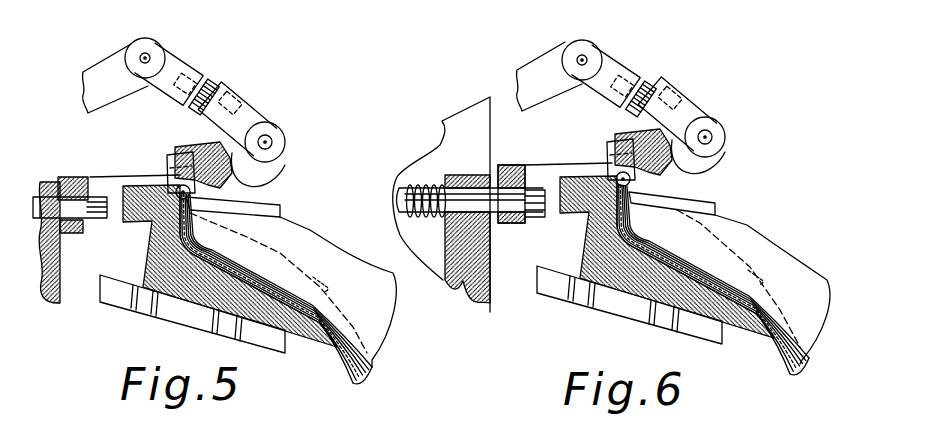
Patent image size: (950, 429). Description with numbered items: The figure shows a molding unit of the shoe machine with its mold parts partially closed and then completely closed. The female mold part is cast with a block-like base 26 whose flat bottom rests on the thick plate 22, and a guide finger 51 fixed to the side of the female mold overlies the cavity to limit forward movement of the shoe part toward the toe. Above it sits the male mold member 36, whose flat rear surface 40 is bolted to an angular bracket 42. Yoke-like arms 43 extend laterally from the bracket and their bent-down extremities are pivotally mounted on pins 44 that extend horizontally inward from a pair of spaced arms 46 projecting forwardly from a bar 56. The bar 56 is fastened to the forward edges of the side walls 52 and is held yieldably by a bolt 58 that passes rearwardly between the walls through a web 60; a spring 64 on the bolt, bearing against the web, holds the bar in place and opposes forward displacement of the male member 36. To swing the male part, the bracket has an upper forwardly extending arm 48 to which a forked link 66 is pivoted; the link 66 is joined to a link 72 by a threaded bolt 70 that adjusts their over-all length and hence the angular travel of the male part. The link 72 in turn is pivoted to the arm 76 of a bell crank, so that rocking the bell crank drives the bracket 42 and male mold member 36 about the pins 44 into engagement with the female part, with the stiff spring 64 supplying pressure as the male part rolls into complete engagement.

In FIG. 5, the plate 22 is at (192, 314).
In FIG. 6, the plate 22 is at (629, 305).
In FIG. 5, the block-like base 26 is at (152, 260).
In FIG. 6, the block-like base 26 is at (590, 252).
In FIG. 5, the male mold member 36 is at (332, 234).
In FIG. 6, the male mold member 36 is at (780, 250).
In FIG. 5, the flat rear surface 40 is at (291, 208).
In FIG. 6, the flat rear surface 40 is at (729, 217).
In FIG. 5, the angular bracket 42 is at (220, 167).
In FIG. 6, the angular bracket 42 is at (661, 159).
In FIG. 6, the yoke-like arms 43 is at (612, 142).
In FIG. 5, the pins 44 is at (242, 181).
In FIG. 6, the pins 44 is at (688, 178).
In FIG. 5, the spaced arms 46 is at (139, 176).
In FIG. 6, the spaced arms 46 is at (574, 165).
In FIG. 5, the forwardly extending arm 48 is at (196, 148).
In FIG. 5, the guide finger 51 is at (178, 187).
In FIG. 6, the guide finger 51 is at (618, 176).
In FIG. 6, the side walls 52 is at (447, 131).
In FIG. 5, the bar 56 is at (77, 240).
In FIG. 6, the bar 56 is at (508, 165).
In FIG. 5, the bolt 58 is at (64, 198).
In FIG. 6, the web 60 is at (460, 278).
In FIG. 6, the spring 64 is at (406, 183).
In FIG. 5, the link 66 is at (251, 94).
In FIG. 6, the link 66 is at (684, 104).
In FIG. 5, the threaded bolt 70 is at (186, 113).
In FIG. 6, the threaded bolt 70 is at (647, 90).
In FIG. 5, the link 72 is at (167, 60).
In FIG. 6, the link 72 is at (603, 65).
In FIG. 5, the arm 76 is at (102, 66).
In FIG. 6, the arm 76 is at (533, 72).